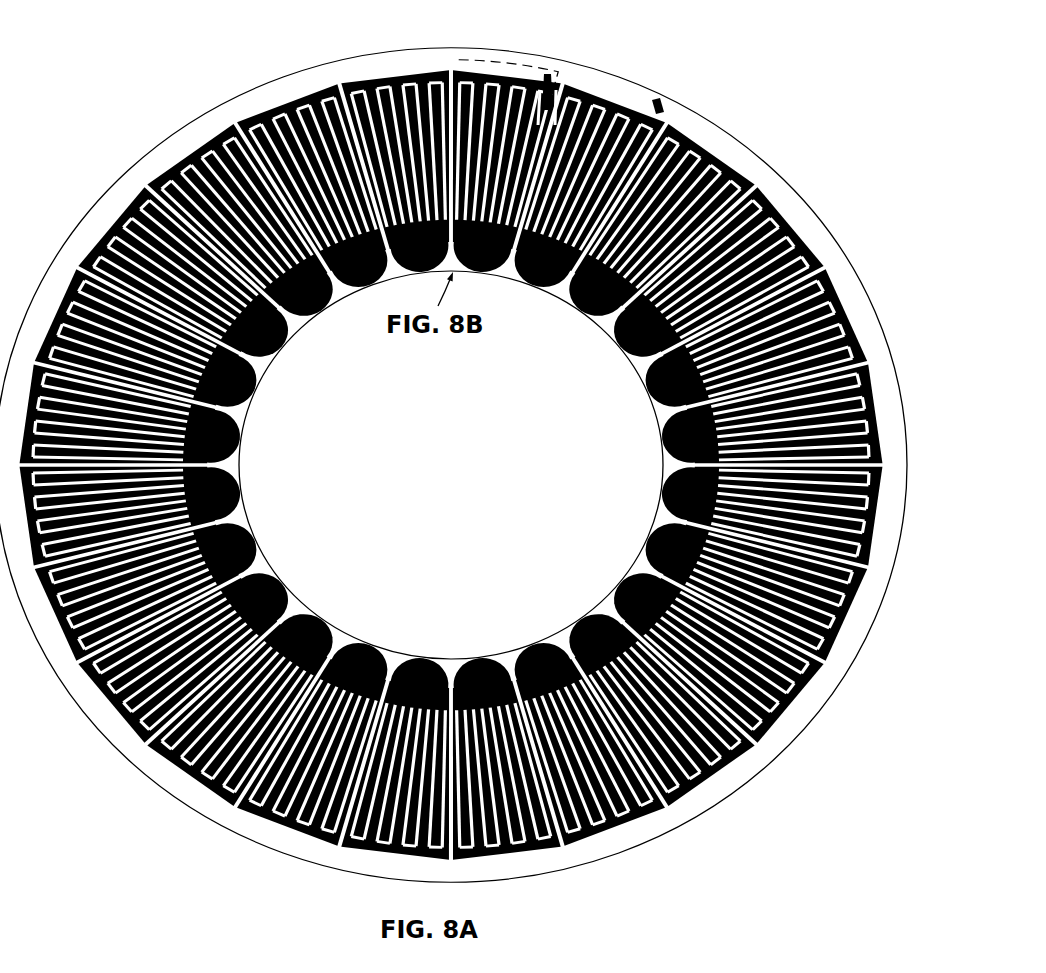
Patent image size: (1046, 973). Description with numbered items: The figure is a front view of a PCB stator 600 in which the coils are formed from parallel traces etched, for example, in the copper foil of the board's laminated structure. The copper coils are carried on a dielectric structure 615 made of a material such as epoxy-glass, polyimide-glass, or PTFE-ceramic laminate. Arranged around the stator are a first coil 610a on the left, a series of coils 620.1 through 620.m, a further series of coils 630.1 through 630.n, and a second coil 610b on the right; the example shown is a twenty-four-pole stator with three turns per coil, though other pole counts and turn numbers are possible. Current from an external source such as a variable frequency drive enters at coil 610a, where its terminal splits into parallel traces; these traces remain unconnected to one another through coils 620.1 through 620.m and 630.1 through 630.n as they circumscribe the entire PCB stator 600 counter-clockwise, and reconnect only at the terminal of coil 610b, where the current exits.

The PCB stator 600 is at (455, 442).
The dielectric structure 615 is at (190, 118).
The coil 620.1 is at (444, 66).
The coil 620.m is at (666, 104).
The coil 630.1 is at (328, 86).
The coil 630.n is at (760, 177).
The coil 610a is at (586, 98).
The coil 610b is at (657, 102).